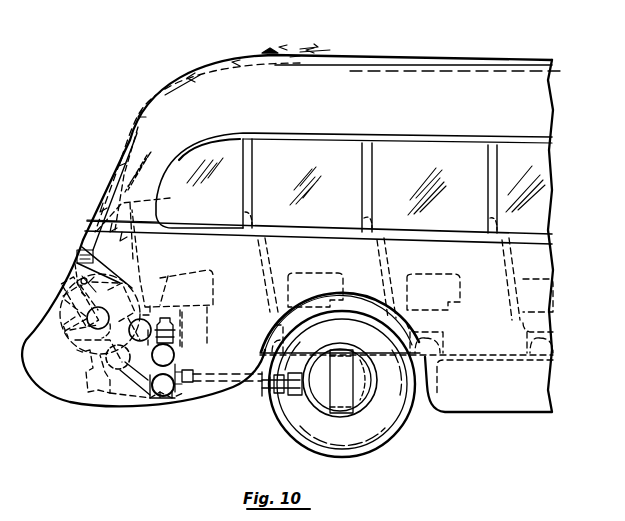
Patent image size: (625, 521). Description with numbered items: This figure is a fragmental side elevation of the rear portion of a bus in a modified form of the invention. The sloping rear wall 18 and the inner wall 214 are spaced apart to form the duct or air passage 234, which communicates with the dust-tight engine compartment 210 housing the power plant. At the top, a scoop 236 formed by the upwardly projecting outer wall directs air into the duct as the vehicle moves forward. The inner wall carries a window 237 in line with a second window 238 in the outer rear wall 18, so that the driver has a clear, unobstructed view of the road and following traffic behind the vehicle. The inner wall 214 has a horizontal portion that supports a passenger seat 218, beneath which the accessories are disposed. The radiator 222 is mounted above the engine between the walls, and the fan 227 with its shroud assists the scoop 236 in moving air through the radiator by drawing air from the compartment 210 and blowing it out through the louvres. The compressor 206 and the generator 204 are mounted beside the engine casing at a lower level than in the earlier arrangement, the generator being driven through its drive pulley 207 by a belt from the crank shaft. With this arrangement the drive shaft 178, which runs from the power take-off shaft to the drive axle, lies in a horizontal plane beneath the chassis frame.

The rear wall 18 is at (90, 222).
The drive shaft 178 is at (245, 380).
The generator 204 is at (166, 390).
The compressor 206 is at (177, 345).
The drive pulley 207 is at (185, 368).
The engine compartment 210 is at (73, 373).
The inner wall 214 is at (158, 198).
The passenger seat 218 is at (178, 282).
The radiator 222 is at (76, 250).
The fan 227 is at (88, 330).
The air passage 234 is at (180, 74).
The scoop 236 is at (270, 50).
The window 237 is at (140, 156).
The second window 238 is at (110, 173).